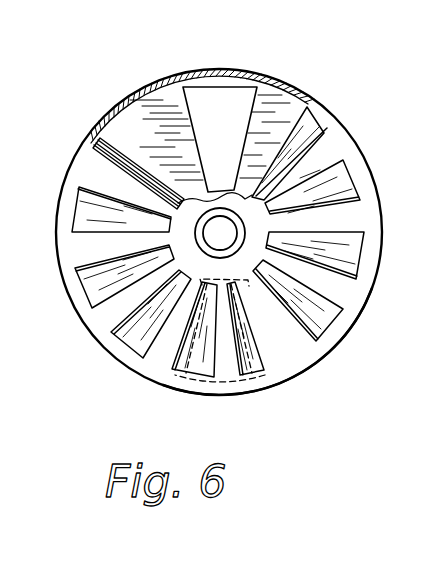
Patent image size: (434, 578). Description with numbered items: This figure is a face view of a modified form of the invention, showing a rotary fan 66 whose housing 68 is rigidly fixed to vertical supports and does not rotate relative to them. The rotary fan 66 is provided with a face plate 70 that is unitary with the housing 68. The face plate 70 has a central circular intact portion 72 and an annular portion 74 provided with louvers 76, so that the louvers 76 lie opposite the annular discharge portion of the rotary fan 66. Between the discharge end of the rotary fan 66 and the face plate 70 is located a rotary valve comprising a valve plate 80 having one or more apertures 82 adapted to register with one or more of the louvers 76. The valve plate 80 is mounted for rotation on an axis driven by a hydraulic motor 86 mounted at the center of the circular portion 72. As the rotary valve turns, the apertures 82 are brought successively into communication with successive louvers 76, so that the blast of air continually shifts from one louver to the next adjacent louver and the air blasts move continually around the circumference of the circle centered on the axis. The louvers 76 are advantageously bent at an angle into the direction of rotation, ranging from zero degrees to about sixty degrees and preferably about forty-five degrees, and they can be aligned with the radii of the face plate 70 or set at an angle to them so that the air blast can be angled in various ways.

The rotary fan 66 is at (163, 50).
The housing 68 is at (100, 118).
The face plate 70 is at (104, 350).
The central circular intact portion 72 is at (252, 222).
The annular portion 74 is at (290, 395).
The louvers 76 is at (97, 158).
The valve plate 80 is at (137, 117).
The apertures 82 is at (222, 80).
The hydraulic motor 86 is at (208, 232).